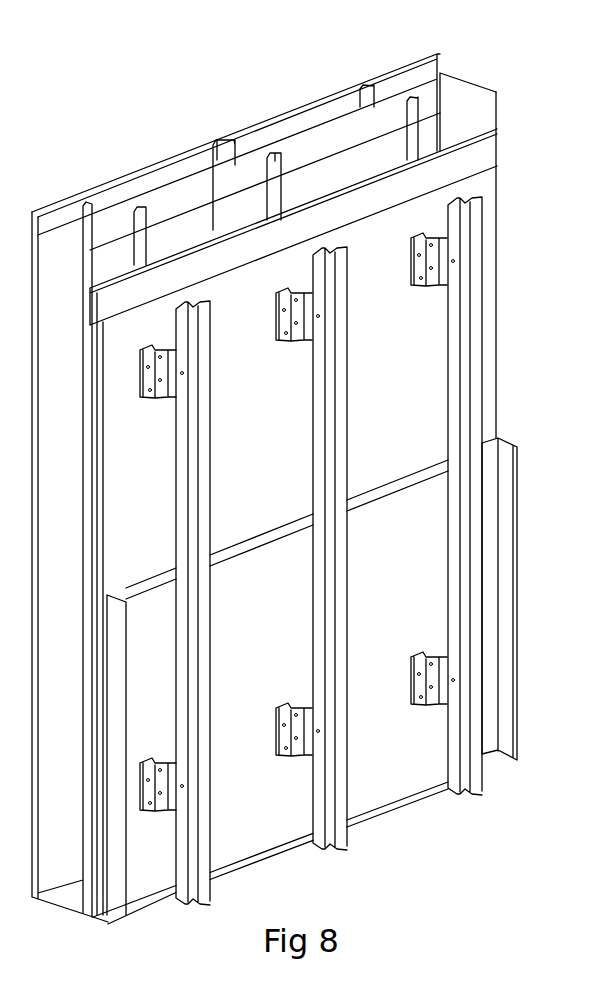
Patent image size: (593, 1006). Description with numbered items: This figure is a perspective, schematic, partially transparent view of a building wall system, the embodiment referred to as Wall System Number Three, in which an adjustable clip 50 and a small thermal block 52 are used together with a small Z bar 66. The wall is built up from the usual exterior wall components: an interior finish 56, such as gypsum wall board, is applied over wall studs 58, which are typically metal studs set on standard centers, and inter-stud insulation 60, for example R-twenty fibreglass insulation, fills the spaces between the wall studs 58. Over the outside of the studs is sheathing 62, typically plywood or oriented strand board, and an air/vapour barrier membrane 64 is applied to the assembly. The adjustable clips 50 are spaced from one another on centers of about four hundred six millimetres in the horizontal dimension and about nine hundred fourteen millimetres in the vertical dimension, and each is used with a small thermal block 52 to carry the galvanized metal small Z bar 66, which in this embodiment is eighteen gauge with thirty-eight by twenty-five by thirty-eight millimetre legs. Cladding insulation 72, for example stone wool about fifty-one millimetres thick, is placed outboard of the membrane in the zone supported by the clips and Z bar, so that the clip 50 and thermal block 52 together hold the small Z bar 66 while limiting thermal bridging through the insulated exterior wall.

The adjustable clip 50 is at (432, 242).
The small thermal block 52 is at (420, 233).
The interior finish 56 is at (171, 205).
The wall stud 58 is at (232, 162).
The inter-stud insulation 60 is at (162, 170).
The sheathing 62 is at (364, 192).
The air/vapour barrier membrane 64 is at (390, 237).
The small Z bar 66 is at (473, 403).
The cladding insulation 72 is at (396, 785).